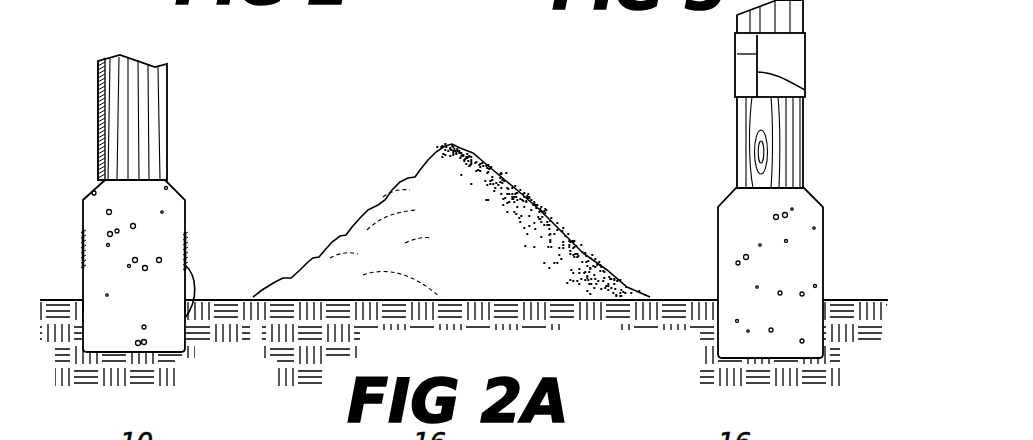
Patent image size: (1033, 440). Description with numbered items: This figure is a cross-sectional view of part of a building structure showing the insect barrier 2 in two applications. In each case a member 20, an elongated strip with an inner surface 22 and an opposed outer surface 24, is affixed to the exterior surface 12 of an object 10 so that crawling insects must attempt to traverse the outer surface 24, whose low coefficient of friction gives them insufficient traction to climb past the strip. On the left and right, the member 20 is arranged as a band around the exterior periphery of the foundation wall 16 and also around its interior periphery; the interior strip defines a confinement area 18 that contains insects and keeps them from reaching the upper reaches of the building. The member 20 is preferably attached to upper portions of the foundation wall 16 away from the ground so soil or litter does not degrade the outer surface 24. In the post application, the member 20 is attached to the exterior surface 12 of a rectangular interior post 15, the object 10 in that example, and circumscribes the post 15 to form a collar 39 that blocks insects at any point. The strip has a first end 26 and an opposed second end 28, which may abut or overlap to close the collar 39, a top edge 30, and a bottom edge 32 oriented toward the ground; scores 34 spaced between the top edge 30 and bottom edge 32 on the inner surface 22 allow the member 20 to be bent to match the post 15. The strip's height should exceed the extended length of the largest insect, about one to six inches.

The object 10 is at (172, 183).
The exterior surface 12 is at (184, 194).
The interior post 15 is at (746, 170).
The foundation wall 16 is at (97, 180).
The confinement area 18 is at (415, 178).
The member 20 is at (81, 238).
The inner surface 22 is at (84, 250).
The outer surface 24 is at (81, 258).
The first end 26 is at (737, 57).
The second end 28 is at (800, 78).
The top edge 30 is at (82, 235).
The bottom edge 32 is at (82, 266).
The scores 34 is at (805, 33).
The collar 39 is at (742, 42).
The insect barrier 2 is at (805, 52).